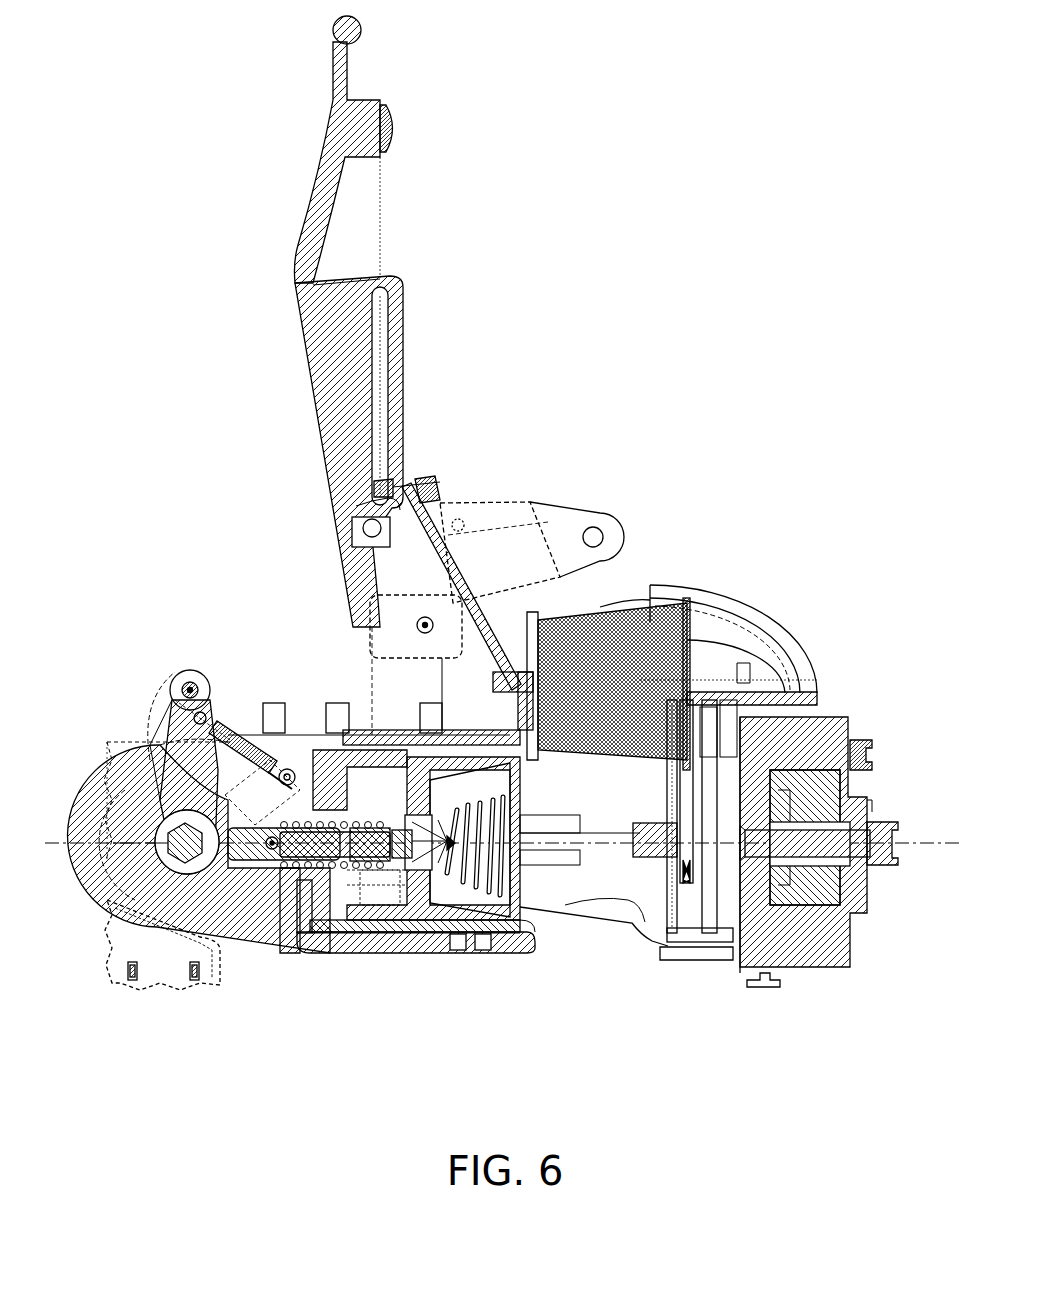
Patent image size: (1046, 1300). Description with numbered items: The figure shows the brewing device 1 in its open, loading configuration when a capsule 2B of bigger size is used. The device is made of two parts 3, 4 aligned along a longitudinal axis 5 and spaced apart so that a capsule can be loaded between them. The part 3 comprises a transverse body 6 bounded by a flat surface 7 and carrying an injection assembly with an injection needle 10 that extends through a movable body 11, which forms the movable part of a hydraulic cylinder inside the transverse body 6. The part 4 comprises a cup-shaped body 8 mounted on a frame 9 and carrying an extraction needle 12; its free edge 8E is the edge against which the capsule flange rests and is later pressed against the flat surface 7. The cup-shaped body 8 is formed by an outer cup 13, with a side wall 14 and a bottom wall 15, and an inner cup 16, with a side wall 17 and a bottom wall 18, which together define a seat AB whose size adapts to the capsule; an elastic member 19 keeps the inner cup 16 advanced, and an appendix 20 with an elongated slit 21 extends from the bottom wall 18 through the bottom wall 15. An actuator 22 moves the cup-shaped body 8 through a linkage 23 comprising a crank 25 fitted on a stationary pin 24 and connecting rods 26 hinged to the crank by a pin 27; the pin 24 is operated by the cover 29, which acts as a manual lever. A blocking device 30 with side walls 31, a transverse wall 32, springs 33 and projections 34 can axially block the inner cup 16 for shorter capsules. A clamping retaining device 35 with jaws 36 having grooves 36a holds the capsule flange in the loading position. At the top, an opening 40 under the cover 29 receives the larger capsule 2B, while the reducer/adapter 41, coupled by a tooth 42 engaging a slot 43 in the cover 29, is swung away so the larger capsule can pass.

The brewing device 1 is at (634, 282).
The capsule 2B is at (635, 612).
The part 3 is at (831, 991).
The part 4 is at (331, 1011).
The longitudinal axis 5 is at (65, 843).
The transverse body 6 is at (836, 976).
The flat surface 7 is at (759, 758).
The cup-shaped body 8 is at (358, 948).
The free edge 8E is at (525, 931).
The frame 9 is at (590, 915).
The injection needle 10 is at (868, 804).
The movable body 11 is at (818, 905).
The extraction needle 12 is at (452, 805).
The outer cup 13 is at (375, 948).
The side wall 14 is at (410, 945).
The bottom wall 15 is at (310, 945).
The inner cup 16 is at (478, 947).
The side wall 17 is at (458, 945).
The bottom wall 18 is at (405, 758).
The elastic member 19 is at (350, 730).
The appendix 20 is at (262, 862).
The elongated slit 21 is at (273, 870).
The actuator 22 is at (142, 643).
The linkage 23 is at (152, 693).
The stationary pin 24 is at (158, 806).
The crank 25 is at (108, 745).
The connecting rods 26 is at (212, 700).
The pin 27 is at (189, 680).
The cover 29 is at (340, 432).
The blocking device 30 is at (286, 822).
The side walls 31 is at (270, 772).
The transverse wall 32 is at (252, 758).
The elastic retention and return element 33 is at (238, 733).
The projections 34 is at (322, 735).
The clamping retaining device 35 is at (664, 890).
The jaws 36 is at (706, 944).
The grooves 36a is at (692, 890).
The opening 40 is at (568, 722).
The reducer/adapter 41 is at (515, 590).
The tooth 42 is at (398, 490).
The slot 43 is at (384, 400).
The seat AB is at (493, 787).